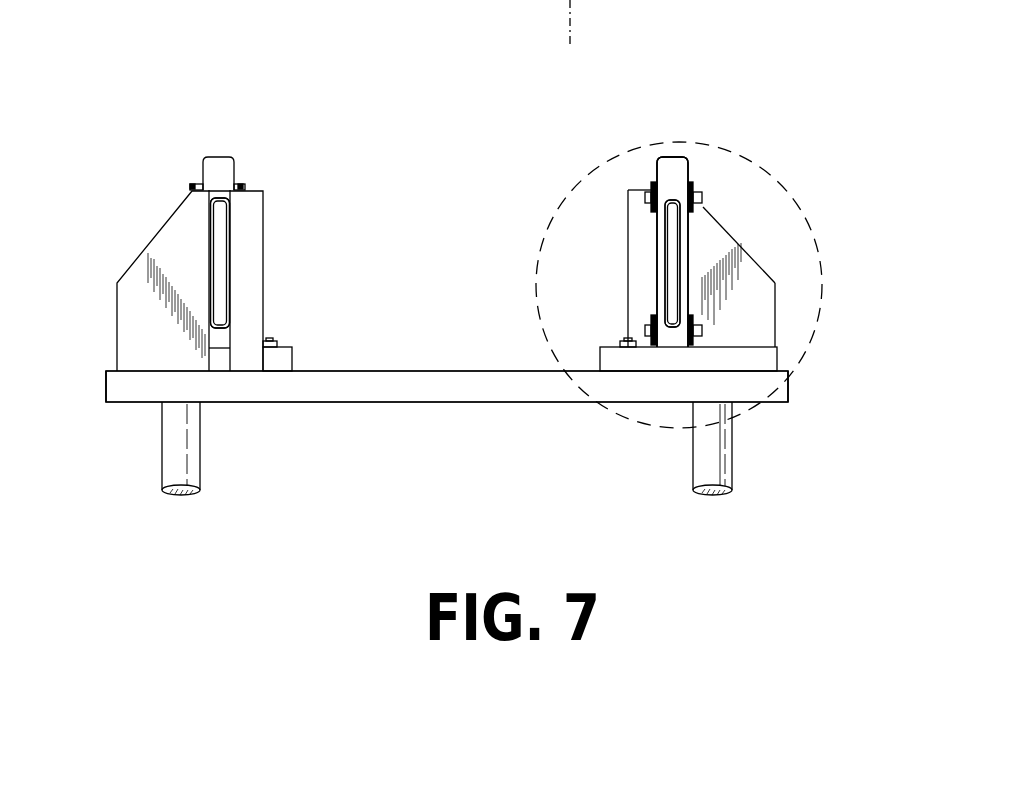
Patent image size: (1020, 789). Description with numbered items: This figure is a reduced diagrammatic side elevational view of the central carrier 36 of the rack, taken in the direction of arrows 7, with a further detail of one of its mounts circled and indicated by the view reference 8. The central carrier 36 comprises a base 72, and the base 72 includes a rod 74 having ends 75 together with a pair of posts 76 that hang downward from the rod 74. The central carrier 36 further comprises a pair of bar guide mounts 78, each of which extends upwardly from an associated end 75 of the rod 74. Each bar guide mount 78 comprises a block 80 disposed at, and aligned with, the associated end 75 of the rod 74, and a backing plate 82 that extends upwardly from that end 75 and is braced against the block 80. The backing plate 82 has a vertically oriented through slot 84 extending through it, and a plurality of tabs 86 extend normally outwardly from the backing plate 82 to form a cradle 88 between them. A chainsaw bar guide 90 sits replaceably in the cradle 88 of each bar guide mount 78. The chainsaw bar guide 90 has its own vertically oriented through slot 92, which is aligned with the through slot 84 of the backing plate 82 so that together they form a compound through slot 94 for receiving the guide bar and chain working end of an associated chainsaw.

The arrows 7 is at (585, 23).
The figure 8 reference 8 is at (593, 414).
The central carrier 36 is at (403, 140).
The base 72 is at (428, 347).
The rod 74 is at (500, 385).
The ends 75 is at (112, 389).
The posts 76 is at (180, 445).
The bar guide mount 78 is at (208, 138).
The block 80 is at (295, 347).
The backing plate 82 is at (152, 241).
The through slot 84 is at (220, 258).
The tabs 86 is at (197, 186).
The cradle 88 is at (657, 287).
The chainsaw bar guide 90 is at (227, 163).
The through slot 92 is at (696, 163).
The compound through slot 94 is at (446, 263).